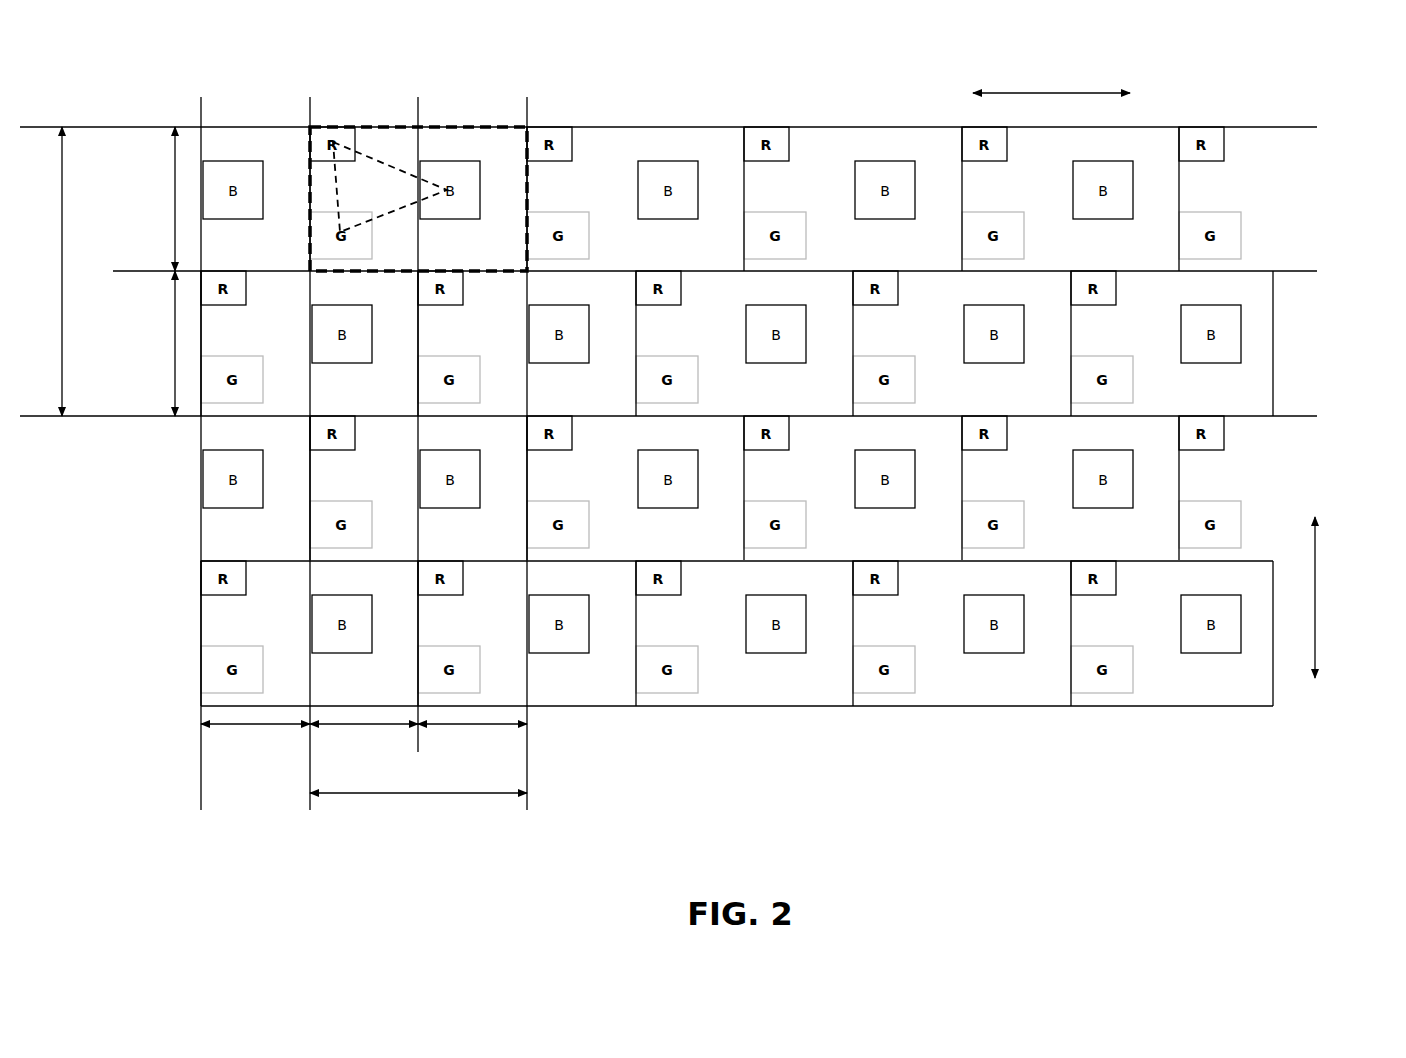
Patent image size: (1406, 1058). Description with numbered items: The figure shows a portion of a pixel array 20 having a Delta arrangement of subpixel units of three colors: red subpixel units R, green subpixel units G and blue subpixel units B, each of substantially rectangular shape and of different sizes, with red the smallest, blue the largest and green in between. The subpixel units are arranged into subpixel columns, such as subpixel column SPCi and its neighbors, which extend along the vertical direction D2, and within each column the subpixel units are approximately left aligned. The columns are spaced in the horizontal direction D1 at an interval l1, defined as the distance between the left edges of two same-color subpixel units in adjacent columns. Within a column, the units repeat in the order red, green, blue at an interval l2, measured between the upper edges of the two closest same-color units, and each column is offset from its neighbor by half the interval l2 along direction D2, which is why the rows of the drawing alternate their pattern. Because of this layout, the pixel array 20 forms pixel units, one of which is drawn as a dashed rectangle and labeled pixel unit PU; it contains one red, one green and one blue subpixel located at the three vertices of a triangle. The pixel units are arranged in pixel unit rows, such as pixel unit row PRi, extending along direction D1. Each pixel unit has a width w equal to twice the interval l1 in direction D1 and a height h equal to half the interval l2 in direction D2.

The pixel array 20 is at (1259, 41).
The pixel unit PU is at (530, 122).
The pixel unit row PRi is at (678, 199).
The subpixel column SPCi is at (255, 447).
The direction D1 is at (1051, 70).
The direction D2 is at (1348, 597).
The dimension h is at (151, 199).
The dimension w is at (418, 814).
The interval l1 is at (364, 745).
The interval l2 is at (133, 352).